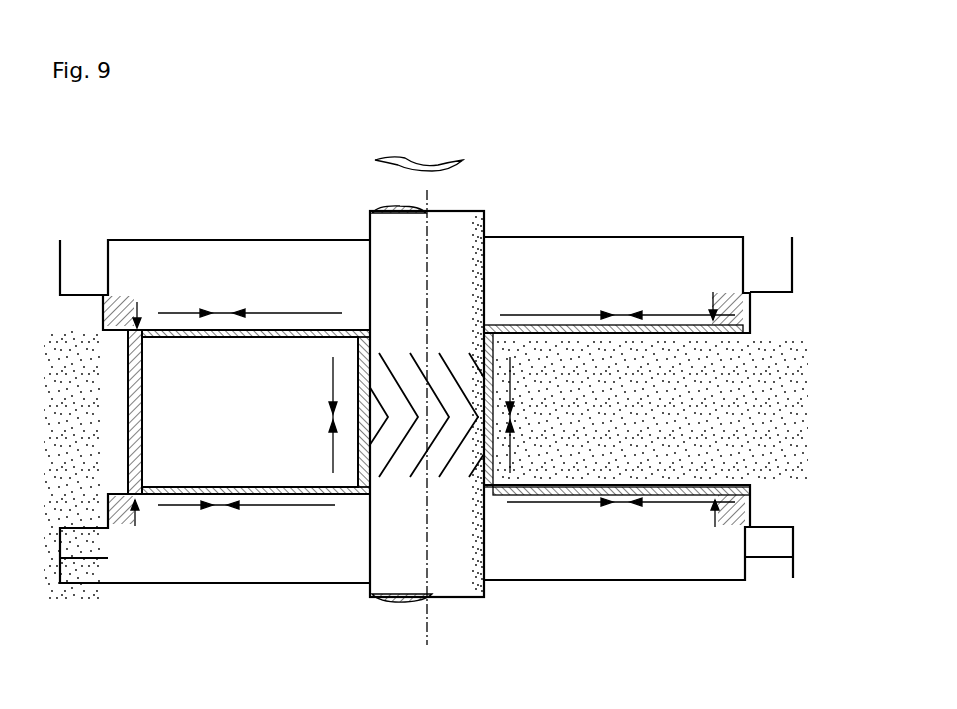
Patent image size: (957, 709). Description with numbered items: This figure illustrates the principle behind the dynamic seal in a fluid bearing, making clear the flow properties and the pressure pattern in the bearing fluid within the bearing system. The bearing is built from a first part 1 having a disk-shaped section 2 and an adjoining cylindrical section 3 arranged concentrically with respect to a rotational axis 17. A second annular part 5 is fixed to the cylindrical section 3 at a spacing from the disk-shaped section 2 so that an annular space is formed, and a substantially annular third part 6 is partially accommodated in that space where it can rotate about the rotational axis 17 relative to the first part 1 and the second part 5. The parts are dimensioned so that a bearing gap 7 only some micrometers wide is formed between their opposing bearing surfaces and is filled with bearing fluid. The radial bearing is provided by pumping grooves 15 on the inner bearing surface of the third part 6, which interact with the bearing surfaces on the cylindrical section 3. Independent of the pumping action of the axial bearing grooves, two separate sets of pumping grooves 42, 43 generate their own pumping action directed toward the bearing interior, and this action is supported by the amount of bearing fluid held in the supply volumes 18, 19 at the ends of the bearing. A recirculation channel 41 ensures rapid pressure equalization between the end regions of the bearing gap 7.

The first part 1 is at (621, 229).
The disk-shaped section 2 is at (291, 270).
The cylindrical section 3 is at (448, 577).
The second annular part 5 is at (290, 560).
The third part 6 is at (648, 417).
The bearing gap 7 is at (250, 493).
The pumping grooves 15 is at (443, 353).
The rotational axis 17 is at (425, 202).
The supply volume 18 is at (778, 267).
The supply volume 19 is at (762, 575).
The recirculation channel 41 is at (128, 370).
The pumping grooves 42 is at (742, 303).
The pumping grooves 43 is at (750, 502).